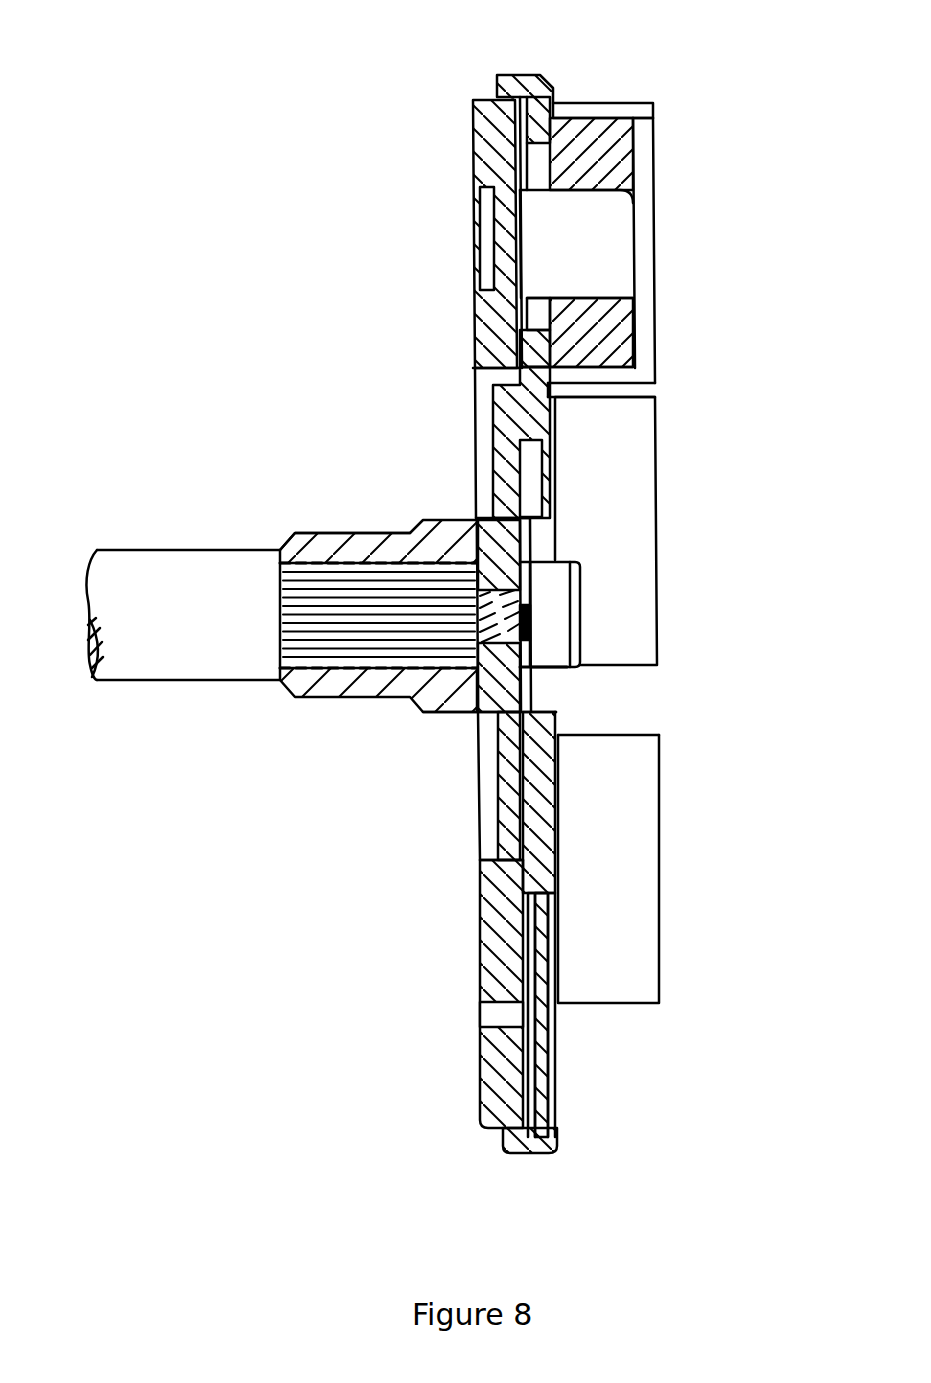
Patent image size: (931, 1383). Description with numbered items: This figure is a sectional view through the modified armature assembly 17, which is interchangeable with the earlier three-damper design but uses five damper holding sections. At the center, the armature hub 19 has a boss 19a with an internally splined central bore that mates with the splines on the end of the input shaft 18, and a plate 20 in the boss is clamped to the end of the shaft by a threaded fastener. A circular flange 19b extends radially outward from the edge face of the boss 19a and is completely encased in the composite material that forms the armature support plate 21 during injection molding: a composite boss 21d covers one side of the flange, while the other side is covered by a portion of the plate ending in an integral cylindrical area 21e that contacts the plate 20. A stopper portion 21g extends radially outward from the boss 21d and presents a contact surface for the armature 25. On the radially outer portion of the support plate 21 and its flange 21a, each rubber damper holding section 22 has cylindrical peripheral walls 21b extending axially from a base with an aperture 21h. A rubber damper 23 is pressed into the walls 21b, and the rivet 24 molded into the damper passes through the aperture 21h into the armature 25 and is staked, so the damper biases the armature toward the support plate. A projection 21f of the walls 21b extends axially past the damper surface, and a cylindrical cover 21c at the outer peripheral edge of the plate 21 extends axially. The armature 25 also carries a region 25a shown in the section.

The armature assembly 17 is at (683, 610).
The input shaft 18 is at (132, 634).
The armature hub 19 is at (385, 527).
The boss 19a is at (335, 530).
The circular flange 19b is at (540, 502).
The plate 20 is at (553, 673).
The armature support plate 21 is at (555, 97).
The flange 21a is at (540, 1112).
The cylindrical peripheral walls 21b is at (608, 103).
The cylindrical cover 21c is at (497, 78).
The composite material boss 21d is at (500, 400).
The integral cylindrical area 21e is at (556, 712).
The projection 21f is at (658, 108).
The stopper portion 21g is at (545, 356).
The aperture 21h is at (475, 168).
The rubber damper holding section 22 is at (670, 193).
The rubber damper 23 is at (607, 328).
The rivet 24 is at (620, 250).
The armature 25 is at (497, 125).
The bar joint 25a is at (483, 1020).